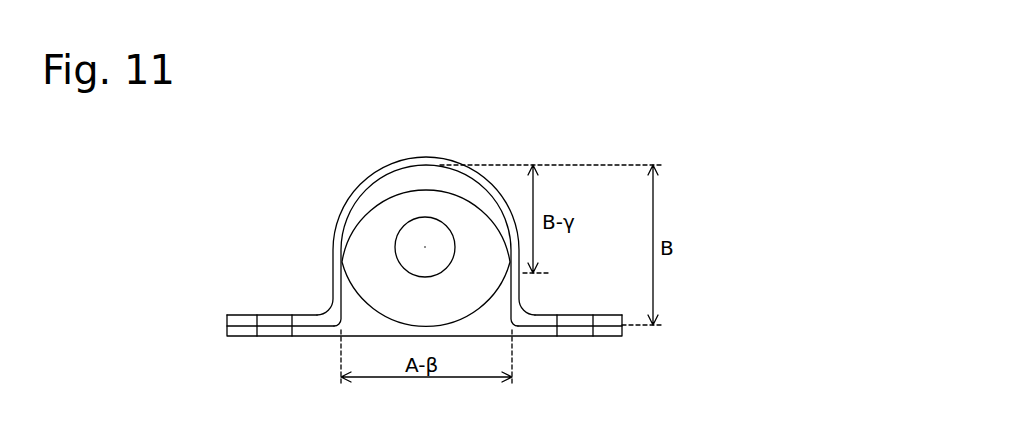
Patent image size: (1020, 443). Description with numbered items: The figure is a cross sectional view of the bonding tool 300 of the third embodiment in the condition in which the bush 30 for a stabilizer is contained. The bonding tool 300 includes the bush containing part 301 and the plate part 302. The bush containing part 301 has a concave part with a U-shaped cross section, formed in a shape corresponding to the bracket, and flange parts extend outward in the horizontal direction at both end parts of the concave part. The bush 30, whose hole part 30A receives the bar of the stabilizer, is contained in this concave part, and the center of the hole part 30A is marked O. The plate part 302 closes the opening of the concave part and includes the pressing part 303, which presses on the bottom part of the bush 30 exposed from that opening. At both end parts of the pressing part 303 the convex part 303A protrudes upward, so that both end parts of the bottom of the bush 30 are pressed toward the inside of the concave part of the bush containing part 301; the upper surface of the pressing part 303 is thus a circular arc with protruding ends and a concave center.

The bonding tool 300 is at (313, 198).
The bush 30 is at (367, 208).
The bush containing part 301 is at (335, 253).
The plate part 302 is at (310, 328).
The pressing part 303 is at (366, 302).
The convex part 303A is at (345, 288).
The hole part 30A is at (428, 218).
The center of hole O is at (425, 247).